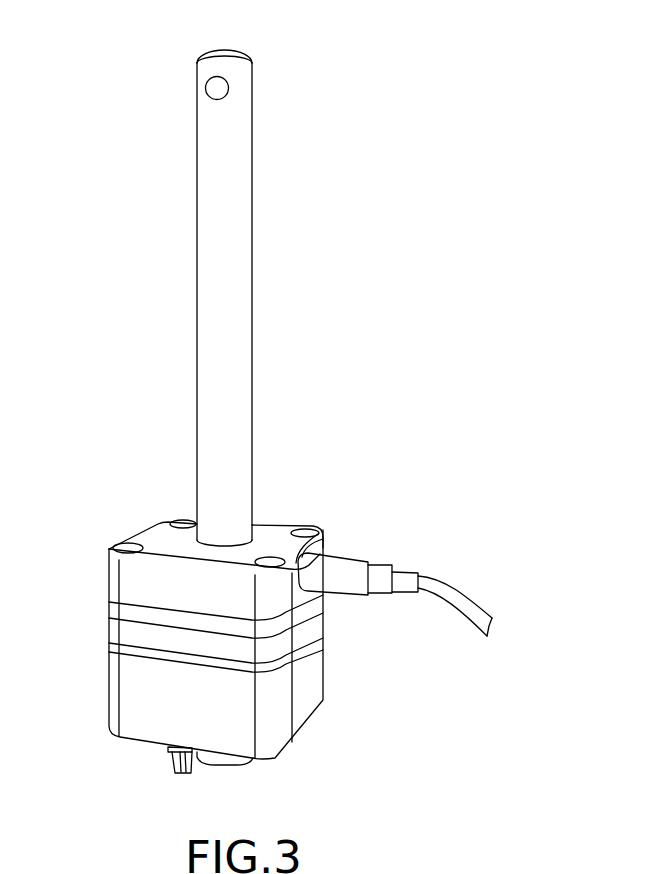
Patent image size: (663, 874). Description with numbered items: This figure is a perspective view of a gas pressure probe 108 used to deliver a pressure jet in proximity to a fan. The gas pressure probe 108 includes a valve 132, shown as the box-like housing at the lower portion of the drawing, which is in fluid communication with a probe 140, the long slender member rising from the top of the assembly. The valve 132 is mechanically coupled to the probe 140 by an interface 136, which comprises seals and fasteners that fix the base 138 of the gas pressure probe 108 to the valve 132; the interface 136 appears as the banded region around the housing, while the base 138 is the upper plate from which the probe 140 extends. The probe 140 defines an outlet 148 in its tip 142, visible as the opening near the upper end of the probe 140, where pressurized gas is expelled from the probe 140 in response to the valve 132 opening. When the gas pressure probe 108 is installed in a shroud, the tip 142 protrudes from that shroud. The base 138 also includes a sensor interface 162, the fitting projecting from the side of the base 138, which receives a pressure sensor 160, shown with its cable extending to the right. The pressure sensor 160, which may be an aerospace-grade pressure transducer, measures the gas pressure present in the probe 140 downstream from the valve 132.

The gas pressure probe 108 is at (377, 114).
The valve 132 is at (327, 675).
The interface 136 is at (115, 607).
The base 138 is at (273, 532).
The probe 140 is at (207, 173).
The tip 142 is at (228, 50).
The outlet 148 is at (214, 88).
The pressure sensor 160 is at (357, 563).
The sensor interface 162 is at (323, 533).